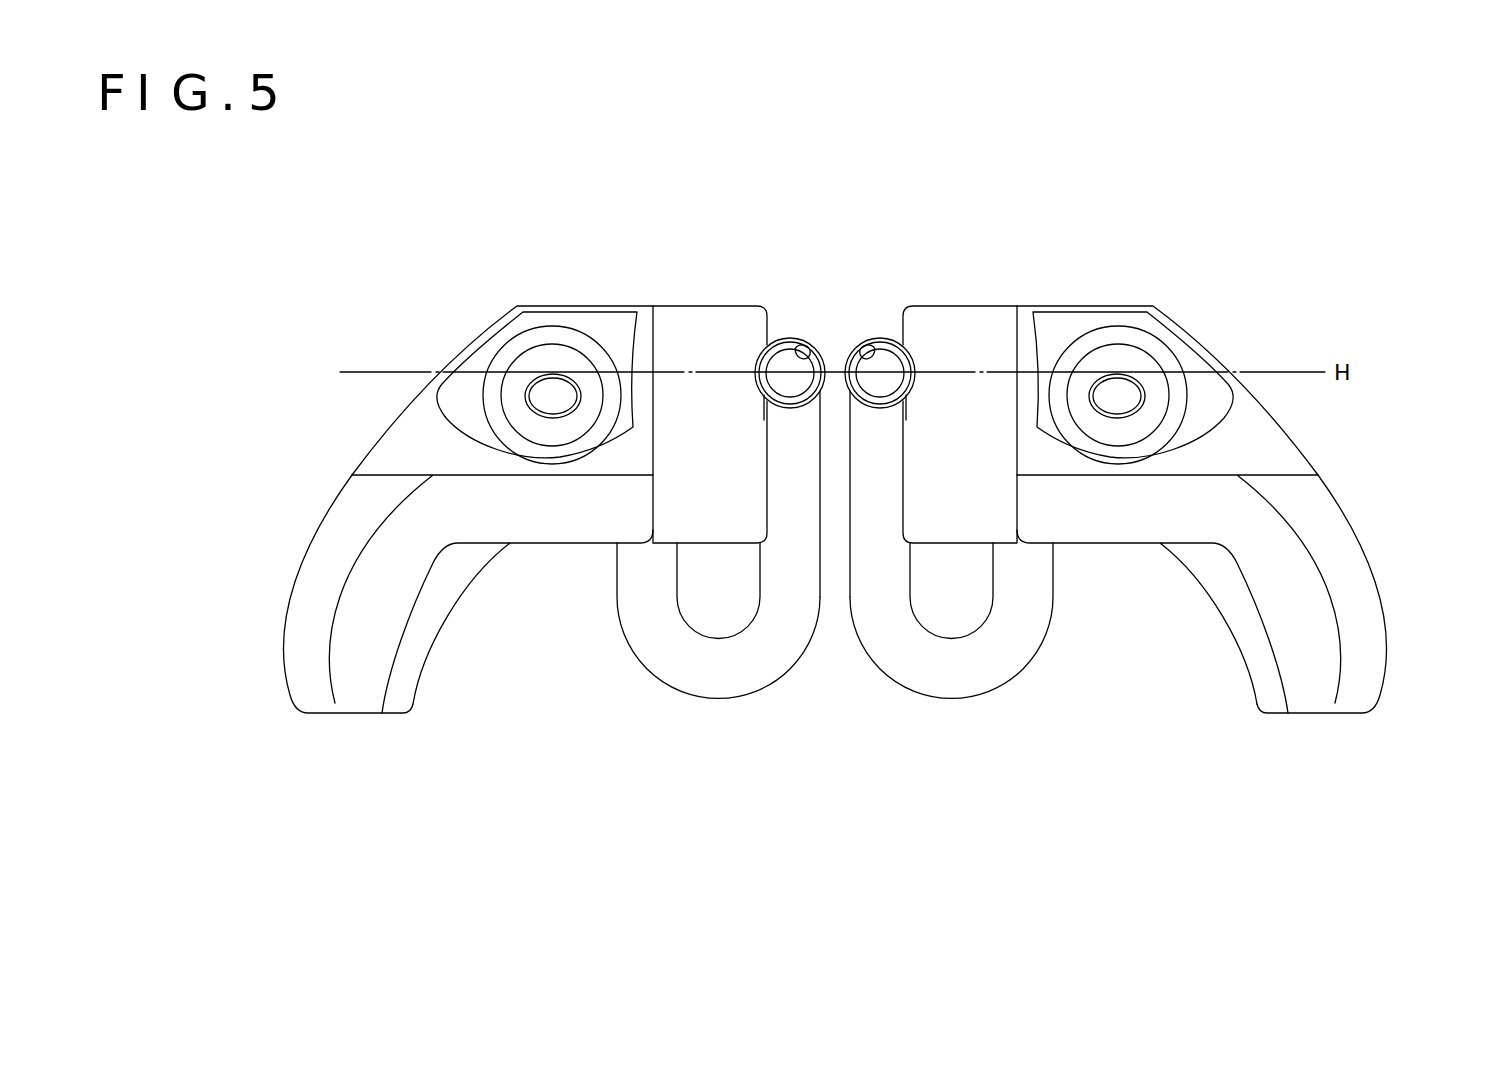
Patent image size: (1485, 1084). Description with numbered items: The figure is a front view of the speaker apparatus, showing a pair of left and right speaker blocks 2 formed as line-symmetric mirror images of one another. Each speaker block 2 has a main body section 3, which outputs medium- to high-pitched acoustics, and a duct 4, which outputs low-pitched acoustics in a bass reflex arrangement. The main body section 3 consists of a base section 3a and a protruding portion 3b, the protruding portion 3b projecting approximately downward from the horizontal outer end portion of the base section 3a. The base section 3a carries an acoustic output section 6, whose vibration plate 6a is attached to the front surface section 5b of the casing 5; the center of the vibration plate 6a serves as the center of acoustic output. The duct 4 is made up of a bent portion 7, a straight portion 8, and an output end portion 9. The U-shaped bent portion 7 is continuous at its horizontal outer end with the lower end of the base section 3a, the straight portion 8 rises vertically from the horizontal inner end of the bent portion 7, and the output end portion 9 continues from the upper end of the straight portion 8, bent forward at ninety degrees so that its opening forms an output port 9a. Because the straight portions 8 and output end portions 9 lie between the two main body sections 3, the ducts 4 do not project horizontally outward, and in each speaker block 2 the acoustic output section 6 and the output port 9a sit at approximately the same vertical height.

The speaker block 2 is at (841, 472).
The main body section 3 is at (682, 317).
The base section 3a is at (457, 352).
The protruding portion 3b is at (290, 617).
The duct 4 is at (690, 683).
The casing 5 is at (377, 460).
The front surface section 5b is at (405, 437).
The acoustic output section 6 is at (560, 358).
The vibration plate 6a is at (555, 407).
The bent portion 7 is at (735, 685).
The straight portion 8 is at (812, 497).
The output end portion 9 is at (783, 338).
The output port 9a is at (812, 337).